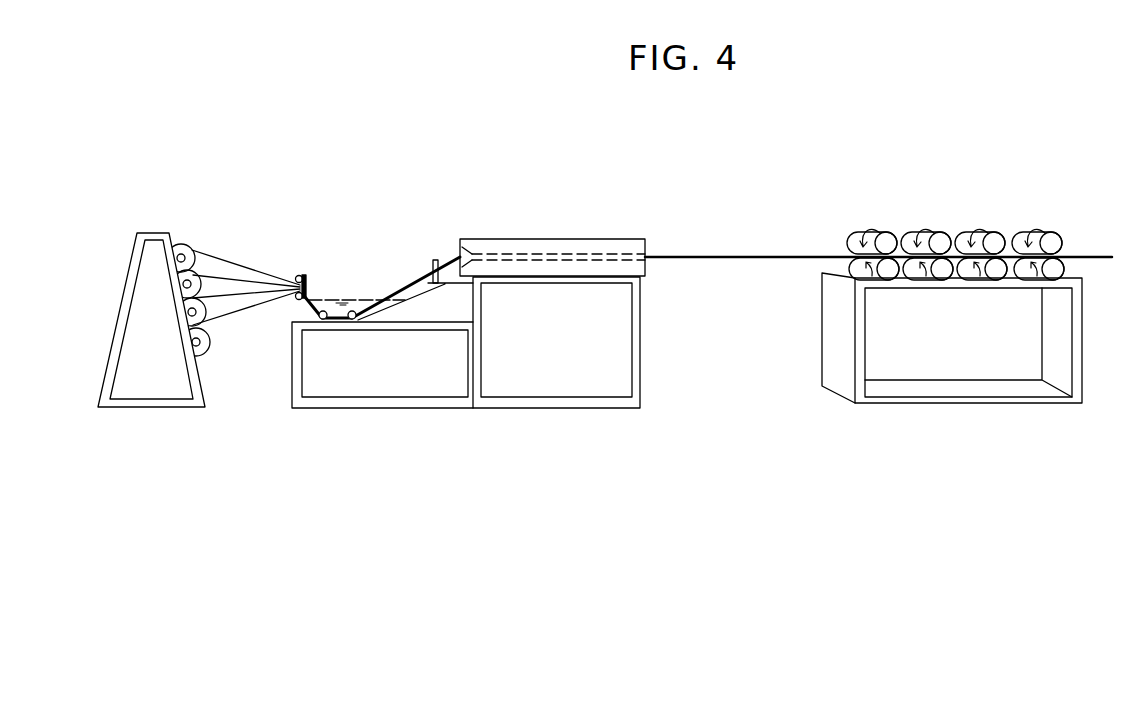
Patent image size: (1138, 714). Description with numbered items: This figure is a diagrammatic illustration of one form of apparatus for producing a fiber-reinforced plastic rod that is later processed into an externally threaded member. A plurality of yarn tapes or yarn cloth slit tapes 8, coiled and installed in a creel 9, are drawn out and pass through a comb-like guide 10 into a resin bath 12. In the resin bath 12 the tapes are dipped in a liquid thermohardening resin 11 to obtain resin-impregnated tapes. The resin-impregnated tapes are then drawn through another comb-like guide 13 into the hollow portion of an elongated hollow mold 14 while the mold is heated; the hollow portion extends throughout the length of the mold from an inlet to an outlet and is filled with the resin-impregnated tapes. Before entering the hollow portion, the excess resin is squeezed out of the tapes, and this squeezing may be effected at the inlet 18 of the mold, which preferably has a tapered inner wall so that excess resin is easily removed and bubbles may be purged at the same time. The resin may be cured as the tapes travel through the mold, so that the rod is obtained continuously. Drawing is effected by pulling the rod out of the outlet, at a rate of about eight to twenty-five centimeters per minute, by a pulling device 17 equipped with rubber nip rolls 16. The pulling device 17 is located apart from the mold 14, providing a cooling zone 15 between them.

The yarn tapes 8 is at (178, 244).
The creel 9 is at (165, 408).
The comb-like guide 10 is at (304, 273).
The liquid thermohardening resin 11 is at (343, 300).
The resin bath 12 is at (379, 319).
The comb-like guide 13 is at (432, 262).
The elongated hollow mold 14 is at (565, 279).
The cooling zone 15 is at (745, 263).
The nip rolls 16 is at (1025, 232).
The pulling device 17 is at (968, 283).
The inlet 18 is at (460, 250).